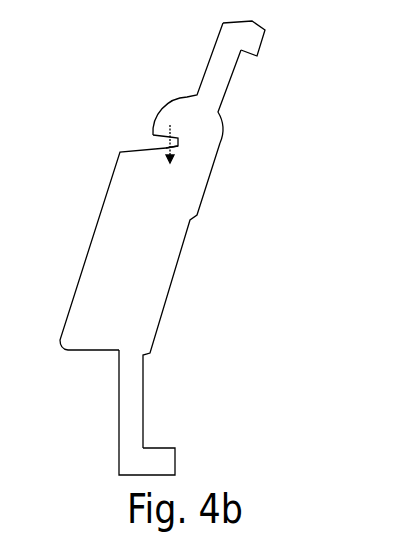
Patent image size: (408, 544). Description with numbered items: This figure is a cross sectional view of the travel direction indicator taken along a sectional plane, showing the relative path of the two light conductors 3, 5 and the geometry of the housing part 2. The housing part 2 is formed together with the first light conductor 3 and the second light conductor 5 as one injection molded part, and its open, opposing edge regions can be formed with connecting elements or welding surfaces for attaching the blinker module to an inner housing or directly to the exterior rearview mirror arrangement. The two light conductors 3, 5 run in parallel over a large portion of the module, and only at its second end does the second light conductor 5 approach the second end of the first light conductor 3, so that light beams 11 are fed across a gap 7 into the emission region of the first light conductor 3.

The housing part 2 is at (258, 37).
The second light conductor 5 is at (180, 105).
The gap 7 is at (168, 139).
The light beams 11 is at (160, 151).
The first light conductor 3 is at (148, 298).